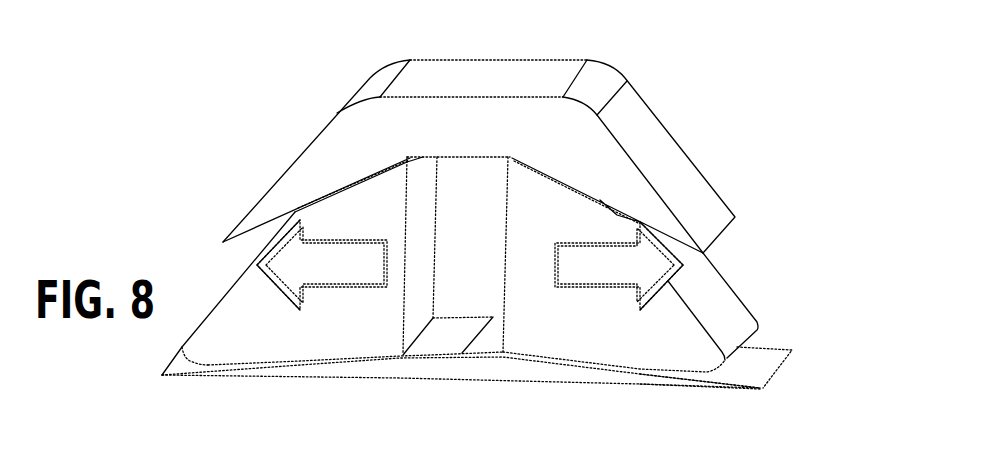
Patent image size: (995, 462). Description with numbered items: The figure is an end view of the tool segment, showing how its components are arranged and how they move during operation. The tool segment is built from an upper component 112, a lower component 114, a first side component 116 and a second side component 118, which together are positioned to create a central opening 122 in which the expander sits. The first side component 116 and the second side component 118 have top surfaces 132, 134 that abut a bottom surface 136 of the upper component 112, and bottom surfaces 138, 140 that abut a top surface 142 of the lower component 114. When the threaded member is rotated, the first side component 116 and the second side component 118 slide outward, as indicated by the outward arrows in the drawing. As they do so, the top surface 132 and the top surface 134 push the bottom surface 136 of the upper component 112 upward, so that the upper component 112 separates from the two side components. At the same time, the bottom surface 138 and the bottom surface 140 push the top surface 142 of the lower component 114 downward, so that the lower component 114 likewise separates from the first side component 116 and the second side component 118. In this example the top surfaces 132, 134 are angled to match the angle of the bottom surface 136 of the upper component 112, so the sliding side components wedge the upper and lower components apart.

The upper component 112 is at (480, 70).
The lower component 114 is at (465, 367).
The first side component 116 is at (293, 340).
The second side component 118 is at (590, 337).
The central opening 122 is at (453, 198).
The top surface of the first side component 132 is at (358, 188).
The top surface of the second side component 134 is at (547, 183).
The bottom surface of the upper component 136 is at (487, 157).
The bottom surface of the first side component 138 is at (345, 363).
The bottom surface of the second side component 140 is at (653, 377).
The top surface of the lower component 142 is at (772, 345).